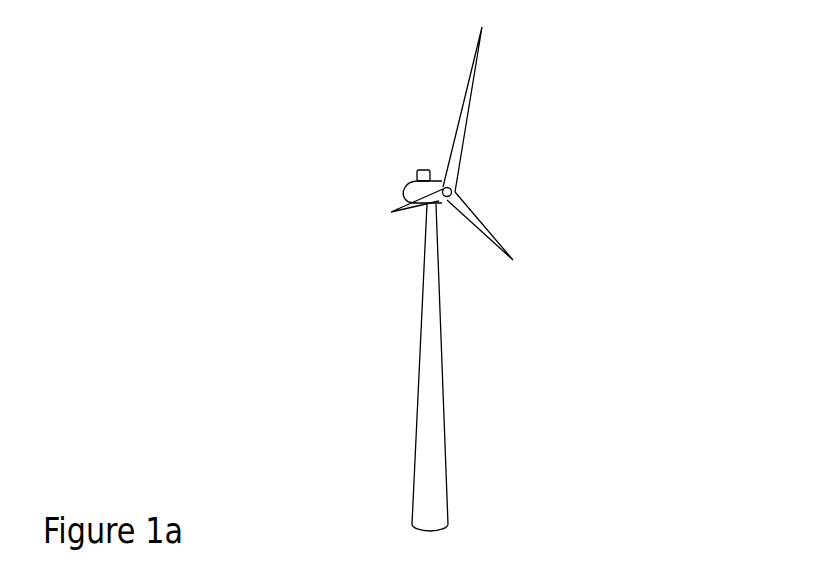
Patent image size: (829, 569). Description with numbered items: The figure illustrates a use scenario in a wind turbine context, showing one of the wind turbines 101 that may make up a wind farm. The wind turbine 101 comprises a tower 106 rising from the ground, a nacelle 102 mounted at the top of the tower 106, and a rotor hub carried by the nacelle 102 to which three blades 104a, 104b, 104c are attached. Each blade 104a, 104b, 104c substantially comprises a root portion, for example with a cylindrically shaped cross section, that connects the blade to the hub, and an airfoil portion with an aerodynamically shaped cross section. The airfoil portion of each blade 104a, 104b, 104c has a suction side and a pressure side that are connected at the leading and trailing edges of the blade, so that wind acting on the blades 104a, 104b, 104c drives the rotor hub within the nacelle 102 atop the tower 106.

The wind turbine 101 is at (193, 44).
The nacelle 102 is at (410, 183).
The blade 104a is at (467, 115).
The blade 104b is at (493, 235).
The blade 104c is at (392, 211).
The tower 106 is at (423, 395).